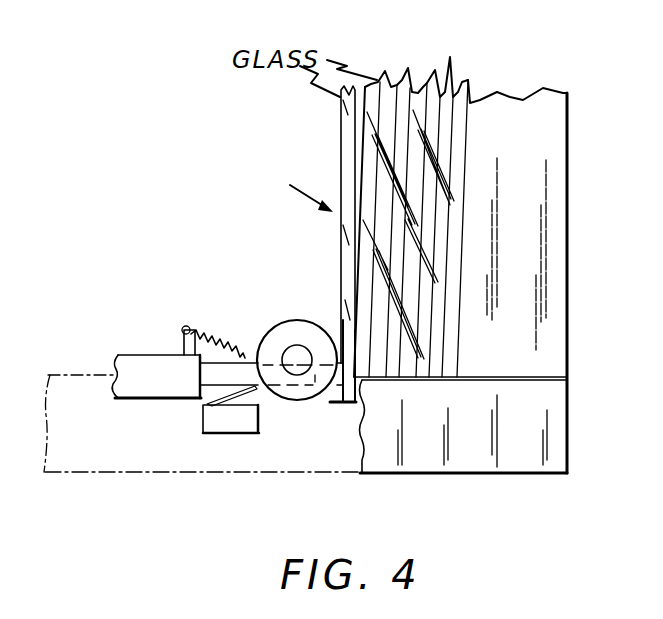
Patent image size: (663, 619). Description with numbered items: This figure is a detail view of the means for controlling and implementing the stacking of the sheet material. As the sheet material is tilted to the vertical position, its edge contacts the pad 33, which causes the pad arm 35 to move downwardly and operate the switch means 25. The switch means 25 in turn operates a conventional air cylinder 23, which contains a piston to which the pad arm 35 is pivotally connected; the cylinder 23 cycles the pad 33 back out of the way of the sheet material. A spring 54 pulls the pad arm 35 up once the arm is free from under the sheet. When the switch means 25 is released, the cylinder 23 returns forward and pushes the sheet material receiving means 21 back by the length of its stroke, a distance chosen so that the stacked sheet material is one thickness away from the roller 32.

The sheet material receiving means 21 is at (467, 377).
The air cylinder 23 is at (130, 362).
The switch means 25 is at (212, 424).
The roller 32 is at (292, 322).
The pad 33 is at (343, 403).
The pad arm 35 is at (230, 374).
The spring 54 is at (212, 335).